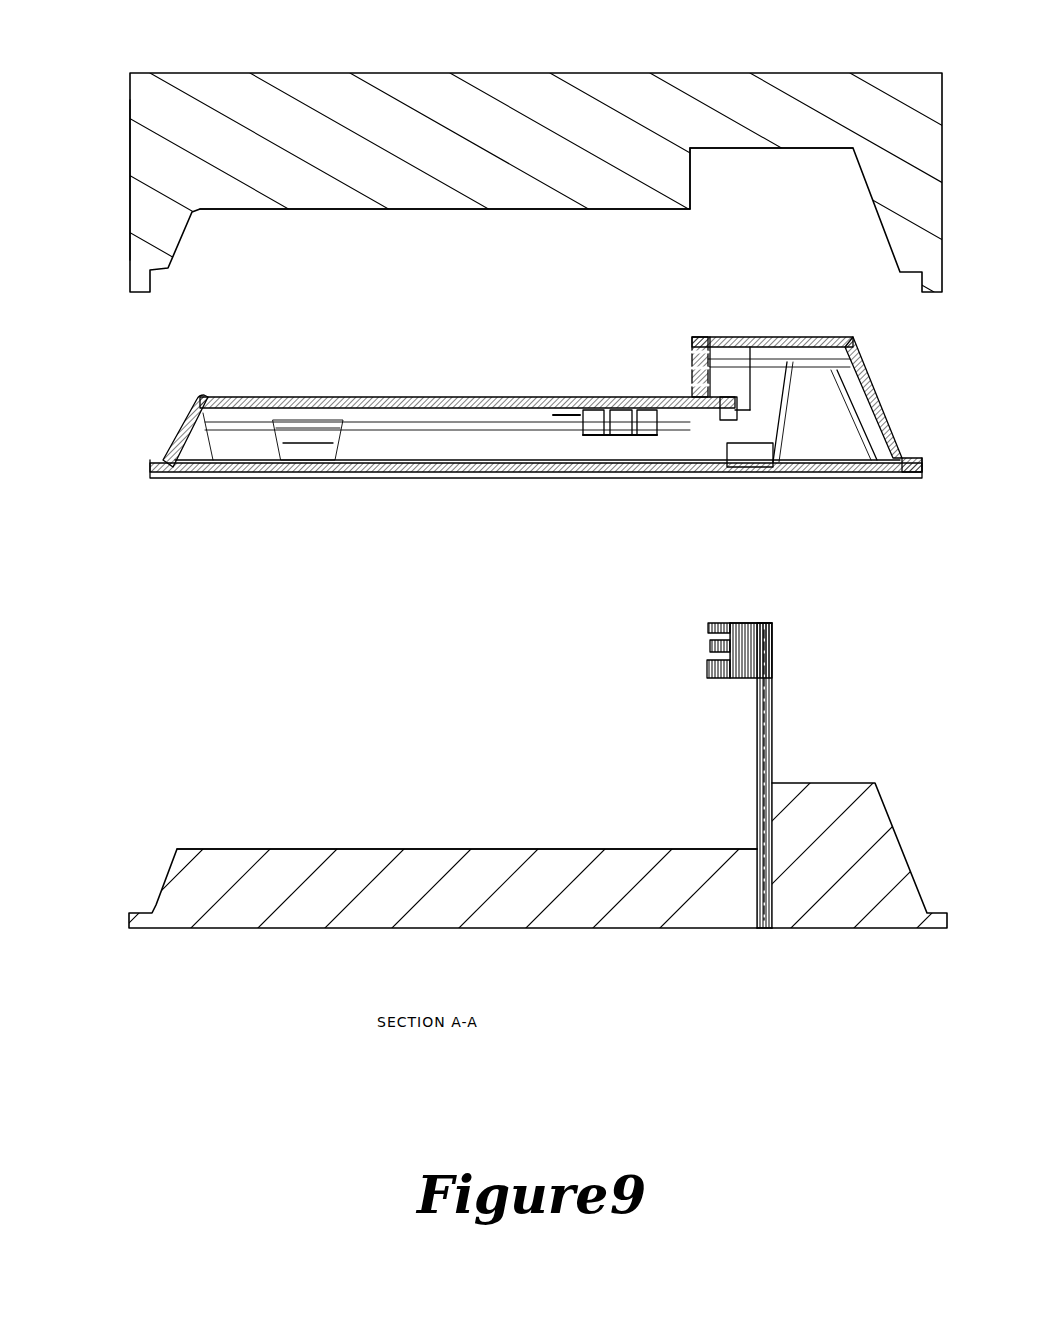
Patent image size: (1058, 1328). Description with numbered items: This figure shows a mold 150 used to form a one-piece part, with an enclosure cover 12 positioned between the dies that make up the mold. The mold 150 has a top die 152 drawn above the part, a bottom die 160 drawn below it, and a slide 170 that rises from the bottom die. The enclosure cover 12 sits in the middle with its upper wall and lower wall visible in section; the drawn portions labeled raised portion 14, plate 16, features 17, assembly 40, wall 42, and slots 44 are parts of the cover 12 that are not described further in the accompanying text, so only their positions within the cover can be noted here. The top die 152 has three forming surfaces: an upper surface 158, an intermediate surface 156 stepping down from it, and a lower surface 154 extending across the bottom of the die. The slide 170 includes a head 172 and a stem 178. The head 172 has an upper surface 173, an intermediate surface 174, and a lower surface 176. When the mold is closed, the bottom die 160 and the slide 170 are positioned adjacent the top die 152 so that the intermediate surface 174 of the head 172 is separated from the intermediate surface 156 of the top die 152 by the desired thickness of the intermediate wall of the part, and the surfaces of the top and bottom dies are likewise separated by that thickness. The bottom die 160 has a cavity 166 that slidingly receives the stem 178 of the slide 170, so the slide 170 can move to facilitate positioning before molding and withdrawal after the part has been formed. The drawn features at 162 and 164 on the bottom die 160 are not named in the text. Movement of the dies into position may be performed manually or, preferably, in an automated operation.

The enclosure cover 12 is at (493, 403).
The raised cover portion 14 is at (775, 337).
The top plate 16 is at (408, 396).
The retention clips 17 is at (722, 400).
The connector assembly 40 is at (628, 348).
The vertical wall 42 is at (702, 360).
The engagement slots 44 is at (661, 361).
The mold 150 is at (106, 94).
The top die 152 is at (126, 182).
The lower surface 154 is at (310, 210).
The intermediate surface 156 is at (688, 175).
The upper surface 158 is at (778, 150).
The bottom die 160 is at (558, 786).
The top surface 162 is at (451, 849).
The raised block 164 is at (832, 783).
The cavity 166 is at (760, 928).
The slide 170 is at (722, 748).
The head 172 is at (772, 645).
The upper surface 173 is at (757, 623).
The intermediate surface 174 is at (708, 650).
The lower surface 176 is at (730, 678).
The stem 178 is at (772, 705).